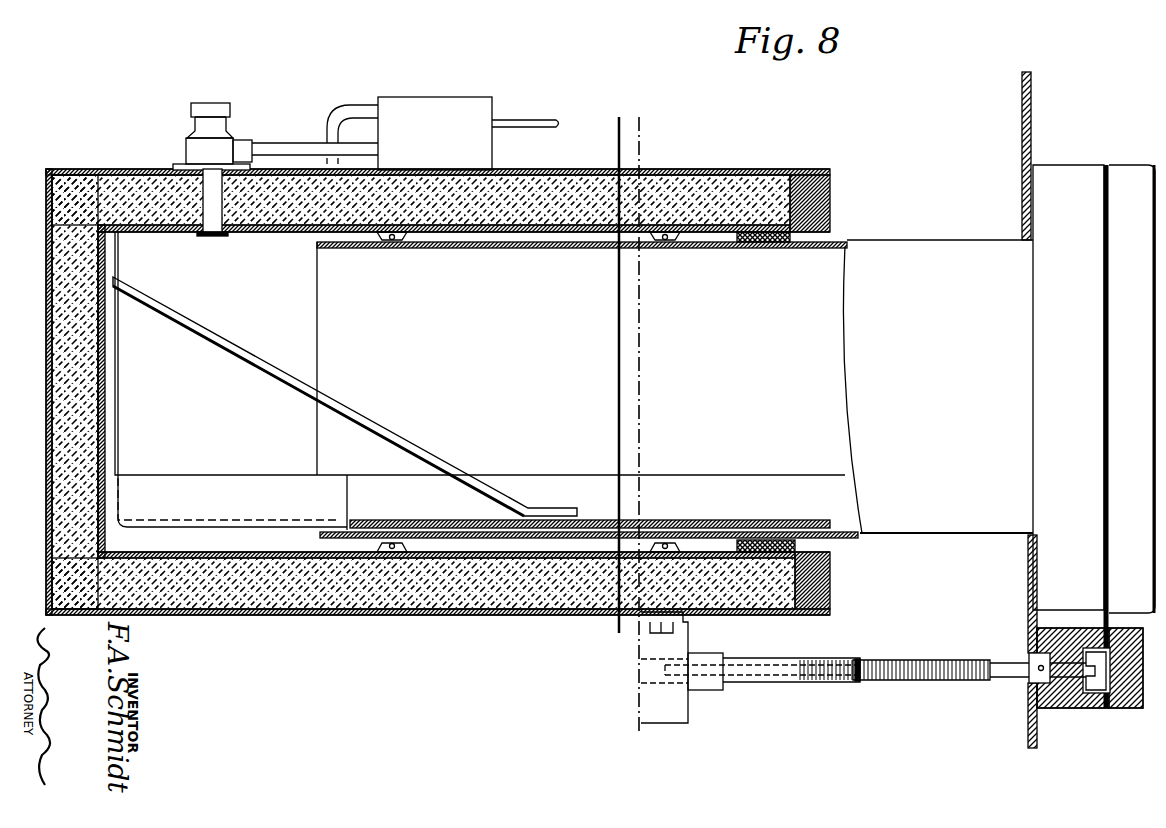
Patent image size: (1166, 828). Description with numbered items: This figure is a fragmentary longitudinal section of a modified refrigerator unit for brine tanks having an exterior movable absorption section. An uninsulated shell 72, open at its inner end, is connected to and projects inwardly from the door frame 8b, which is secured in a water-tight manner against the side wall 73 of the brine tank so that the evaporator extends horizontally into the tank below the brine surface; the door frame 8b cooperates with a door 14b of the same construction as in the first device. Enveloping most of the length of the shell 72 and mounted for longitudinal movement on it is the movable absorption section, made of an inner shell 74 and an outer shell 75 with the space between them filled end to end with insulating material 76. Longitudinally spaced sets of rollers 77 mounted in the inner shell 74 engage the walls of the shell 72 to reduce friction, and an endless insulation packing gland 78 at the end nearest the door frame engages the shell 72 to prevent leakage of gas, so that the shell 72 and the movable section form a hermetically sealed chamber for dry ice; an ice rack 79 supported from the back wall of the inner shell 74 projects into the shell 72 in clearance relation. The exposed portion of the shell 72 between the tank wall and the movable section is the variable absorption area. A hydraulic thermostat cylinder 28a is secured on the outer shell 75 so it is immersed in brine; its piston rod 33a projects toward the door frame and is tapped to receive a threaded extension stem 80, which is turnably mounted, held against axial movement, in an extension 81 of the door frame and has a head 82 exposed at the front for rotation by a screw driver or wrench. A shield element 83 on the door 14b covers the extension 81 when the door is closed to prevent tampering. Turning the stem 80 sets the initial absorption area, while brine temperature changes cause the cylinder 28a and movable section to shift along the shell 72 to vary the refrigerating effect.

The outer shell 75 is at (90, 170).
The inner shell 74 is at (266, 237).
The insulating material 76 is at (275, 617).
The rollers 77 is at (676, 242).
The insulation packing gland 78 is at (778, 248).
The ice rack 79 is at (403, 520).
The door frame 8b is at (1048, 346).
The uninsulated shell 72 is at (893, 513).
The side wall of brine tank 73 is at (1025, 587).
The extension of door frame 81 is at (1029, 710).
The door 14b is at (1128, 438).
The shield element 83 is at (1125, 700).
The head 82 is at (1083, 655).
The threaded extension stem 80 is at (873, 668).
The hydraulic thermostat cylinder 28a is at (670, 705).
The piston rod 33a is at (763, 680).